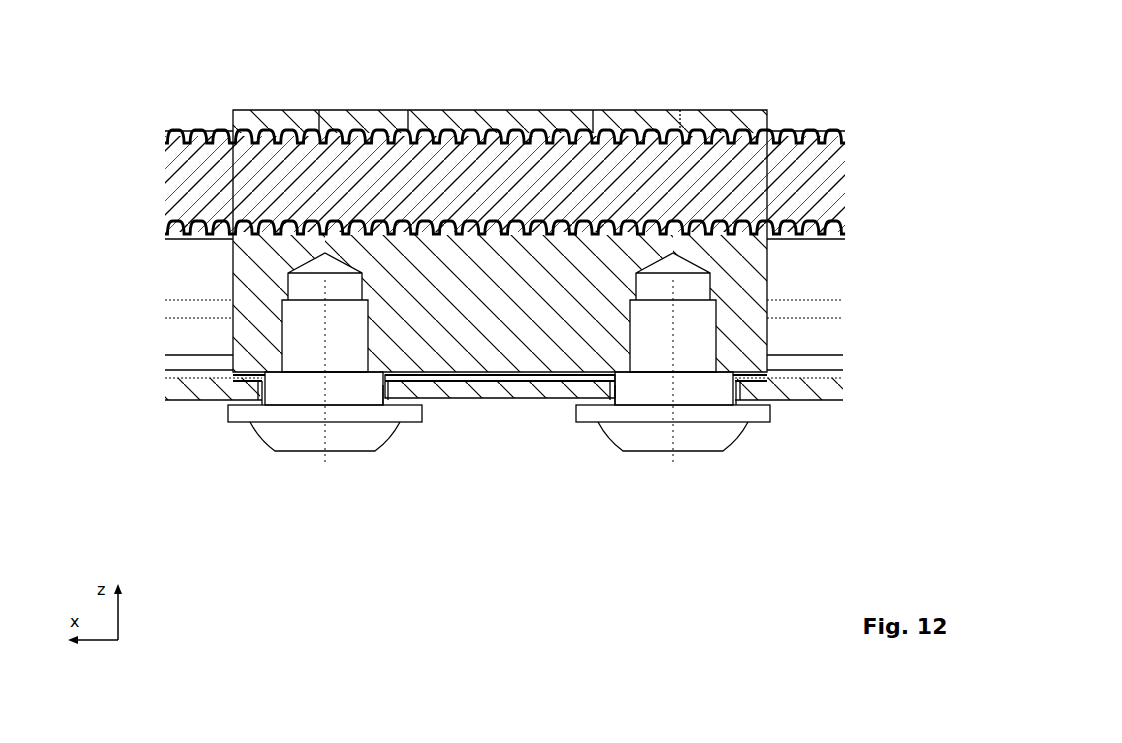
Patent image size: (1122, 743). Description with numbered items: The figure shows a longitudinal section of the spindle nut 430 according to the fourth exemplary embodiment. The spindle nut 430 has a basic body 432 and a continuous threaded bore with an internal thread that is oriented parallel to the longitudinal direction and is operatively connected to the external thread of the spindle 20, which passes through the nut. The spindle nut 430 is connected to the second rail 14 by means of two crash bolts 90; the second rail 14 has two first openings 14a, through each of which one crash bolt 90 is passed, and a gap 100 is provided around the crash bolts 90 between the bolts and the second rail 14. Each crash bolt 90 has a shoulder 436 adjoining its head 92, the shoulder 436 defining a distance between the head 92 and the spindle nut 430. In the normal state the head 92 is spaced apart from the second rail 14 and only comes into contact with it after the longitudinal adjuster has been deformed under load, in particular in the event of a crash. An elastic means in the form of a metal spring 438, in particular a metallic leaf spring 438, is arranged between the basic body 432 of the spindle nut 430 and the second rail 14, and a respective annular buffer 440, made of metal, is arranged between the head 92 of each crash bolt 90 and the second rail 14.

The spindle nut 430 is at (285, 85).
The spindle 20 is at (812, 196).
The basic body 432 is at (585, 265).
The crash bolt 90 is at (292, 324).
The shoulder 436 is at (312, 390).
The buffer 440 is at (400, 405).
The head 92 is at (312, 445).
The metal spring 438 is at (519, 375).
The second rail 14 is at (832, 392).
The gap 100 is at (258, 387).
The first opening 14a is at (240, 394).